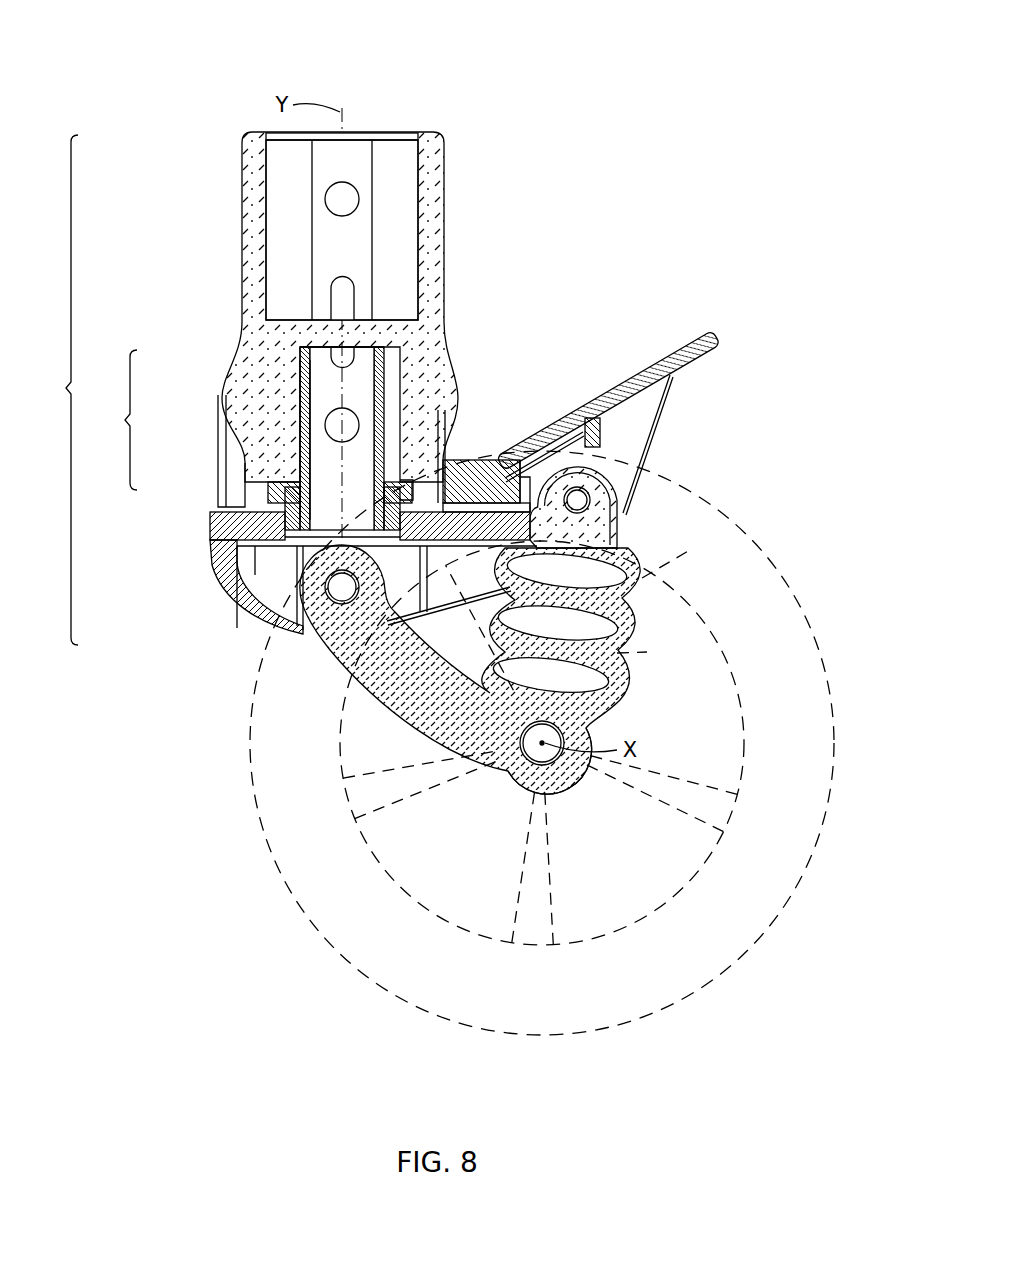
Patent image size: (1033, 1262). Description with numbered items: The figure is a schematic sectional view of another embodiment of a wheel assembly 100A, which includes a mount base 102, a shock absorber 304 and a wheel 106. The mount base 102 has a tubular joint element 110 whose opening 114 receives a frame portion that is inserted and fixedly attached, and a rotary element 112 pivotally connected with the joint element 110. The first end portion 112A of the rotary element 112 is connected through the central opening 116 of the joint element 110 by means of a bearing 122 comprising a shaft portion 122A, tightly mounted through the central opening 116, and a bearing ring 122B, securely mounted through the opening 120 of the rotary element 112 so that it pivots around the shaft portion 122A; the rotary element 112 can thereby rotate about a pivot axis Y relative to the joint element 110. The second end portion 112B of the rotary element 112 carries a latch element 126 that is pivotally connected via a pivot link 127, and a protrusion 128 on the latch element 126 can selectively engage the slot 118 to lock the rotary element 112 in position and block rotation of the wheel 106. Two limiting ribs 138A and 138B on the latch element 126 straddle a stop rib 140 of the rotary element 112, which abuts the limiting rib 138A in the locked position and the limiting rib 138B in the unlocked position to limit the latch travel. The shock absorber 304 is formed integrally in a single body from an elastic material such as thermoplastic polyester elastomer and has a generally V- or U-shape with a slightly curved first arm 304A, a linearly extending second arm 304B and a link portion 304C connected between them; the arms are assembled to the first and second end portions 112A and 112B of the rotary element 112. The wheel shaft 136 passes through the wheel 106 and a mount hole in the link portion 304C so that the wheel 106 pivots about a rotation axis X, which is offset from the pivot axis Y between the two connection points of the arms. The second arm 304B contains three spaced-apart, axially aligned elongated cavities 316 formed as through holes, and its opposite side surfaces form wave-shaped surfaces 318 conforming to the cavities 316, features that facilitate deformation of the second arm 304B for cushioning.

The wheel assembly 100A is at (180, 62).
The mount base 102 is at (50, 390).
The wheel 106 is at (320, 956).
The tubular joint element 110 is at (262, 170).
The rotary element 112 is at (215, 538).
The first end portion 112A is at (250, 616).
The second end portion 112B is at (626, 506).
The opening 114 is at (406, 128).
The central opening 116 is at (286, 418).
The slot 118 is at (460, 447).
The opening 120 is at (210, 520).
The bearing 122 is at (246, 324).
The shaft portion 122A is at (300, 368).
The bearing ring 122B is at (287, 481).
The latch element 126 is at (712, 330).
The pivot link 127 is at (596, 482).
The protrusion 128 is at (520, 455).
The wheel shaft 136 is at (565, 738).
The limiting rib 138A is at (598, 440).
The limiting rib 138B is at (556, 440).
The stop rib 140 is at (591, 426).
The shock absorber 304 is at (318, 708).
The first arm 304A is at (343, 667).
The second arm 304B is at (628, 652).
The link portion 304C is at (560, 786).
The cavities 316 is at (598, 572).
The wave-shaped surfaces 318 is at (600, 622).